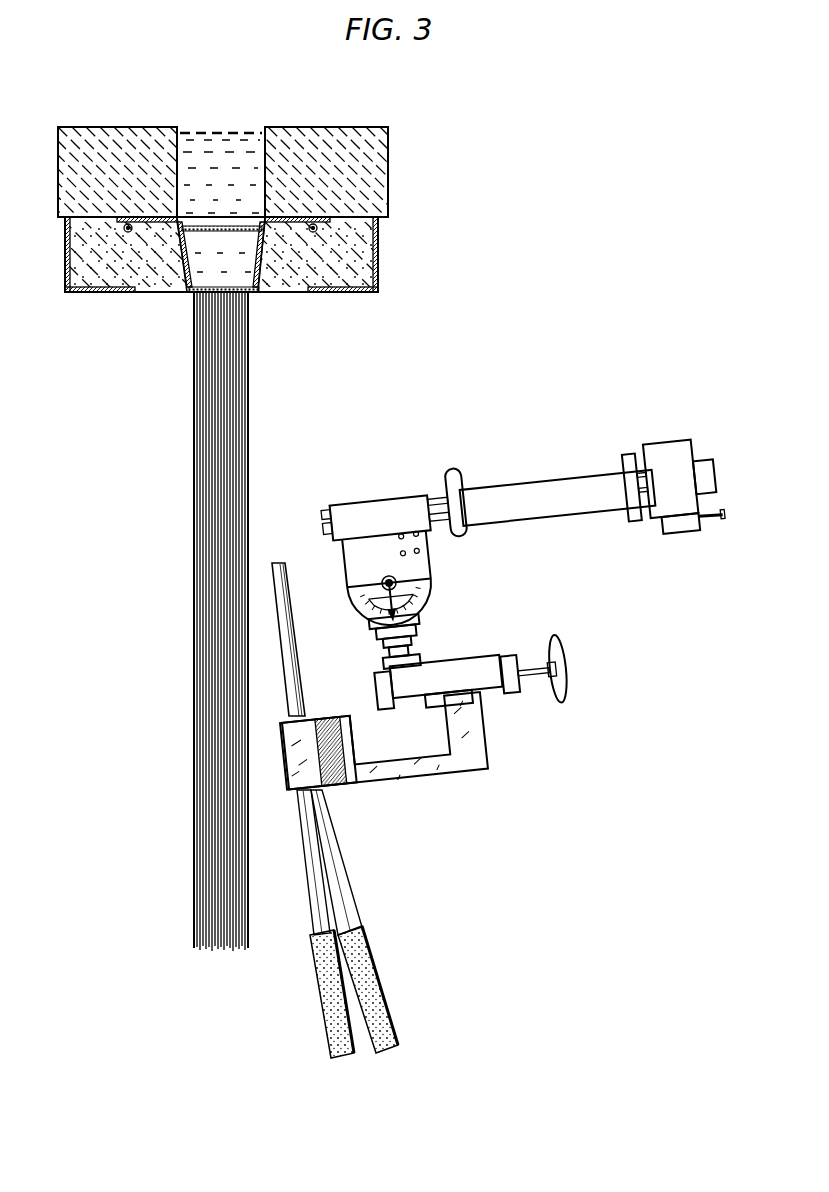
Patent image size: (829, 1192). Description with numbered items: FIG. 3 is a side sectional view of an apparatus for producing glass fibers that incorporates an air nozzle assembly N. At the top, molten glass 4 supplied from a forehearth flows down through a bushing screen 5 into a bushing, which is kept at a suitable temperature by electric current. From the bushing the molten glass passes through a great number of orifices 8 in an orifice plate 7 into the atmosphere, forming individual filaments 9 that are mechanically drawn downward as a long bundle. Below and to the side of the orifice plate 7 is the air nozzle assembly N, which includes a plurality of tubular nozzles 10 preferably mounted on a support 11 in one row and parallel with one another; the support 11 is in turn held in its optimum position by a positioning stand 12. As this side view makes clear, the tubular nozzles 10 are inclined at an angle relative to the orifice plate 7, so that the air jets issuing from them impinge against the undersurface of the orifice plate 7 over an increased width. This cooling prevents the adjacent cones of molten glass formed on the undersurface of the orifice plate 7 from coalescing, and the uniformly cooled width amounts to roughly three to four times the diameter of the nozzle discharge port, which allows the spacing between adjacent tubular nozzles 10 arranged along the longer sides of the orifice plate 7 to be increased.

The molten glass 4 is at (236, 129).
The bushing screen 5 is at (244, 226).
The orifice plate 7 is at (256, 292).
The orifices 8 is at (195, 293).
The filaments 9 is at (247, 392).
The tubular nozzles 10 is at (289, 573).
The support 11 is at (286, 781).
The positioning stand 12 is at (483, 735).
The air nozzle assembly N is at (332, 663).